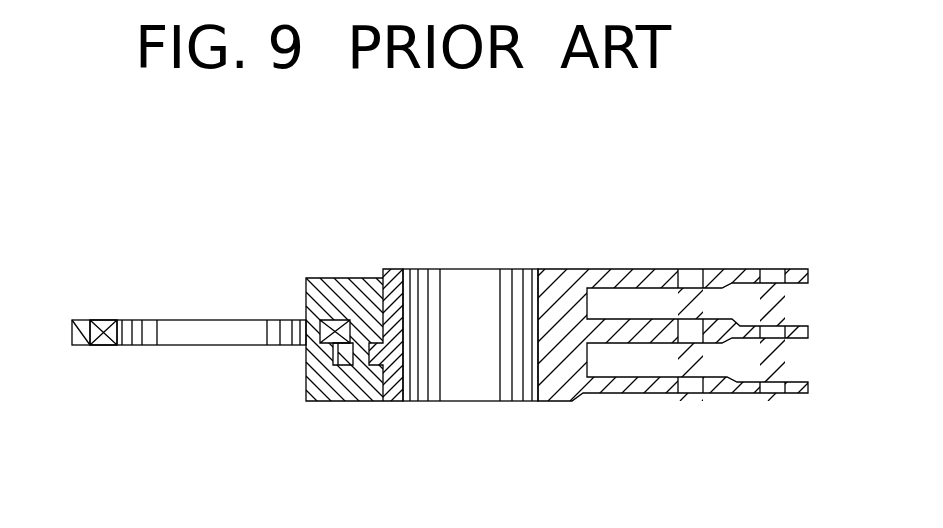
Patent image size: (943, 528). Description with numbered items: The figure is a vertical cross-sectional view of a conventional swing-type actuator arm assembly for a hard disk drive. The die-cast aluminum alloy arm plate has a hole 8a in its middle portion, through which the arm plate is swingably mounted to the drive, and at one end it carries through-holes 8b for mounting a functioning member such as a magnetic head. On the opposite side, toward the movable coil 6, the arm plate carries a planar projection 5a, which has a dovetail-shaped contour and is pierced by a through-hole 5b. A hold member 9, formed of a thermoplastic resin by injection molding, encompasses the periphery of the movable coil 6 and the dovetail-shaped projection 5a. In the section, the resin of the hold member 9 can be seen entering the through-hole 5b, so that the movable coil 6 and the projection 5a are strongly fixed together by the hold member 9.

The hold member 9 is at (341, 288).
The movable coil 6 is at (103, 320).
The planar projection 5a is at (338, 348).
The through-hole 5b is at (350, 362).
The hole 8a is at (478, 292).
The through-holes 8b is at (773, 278).